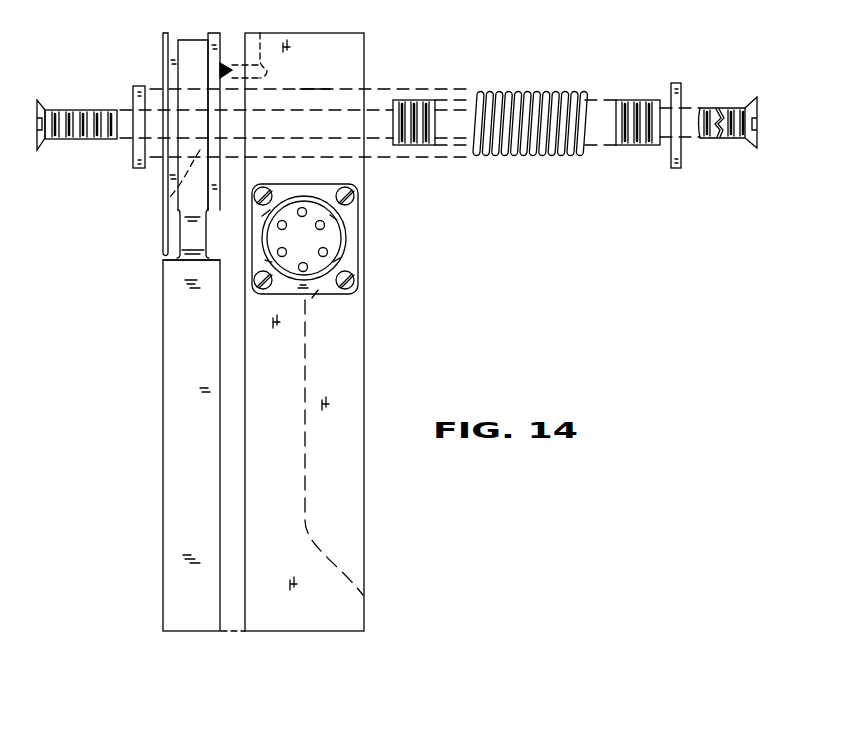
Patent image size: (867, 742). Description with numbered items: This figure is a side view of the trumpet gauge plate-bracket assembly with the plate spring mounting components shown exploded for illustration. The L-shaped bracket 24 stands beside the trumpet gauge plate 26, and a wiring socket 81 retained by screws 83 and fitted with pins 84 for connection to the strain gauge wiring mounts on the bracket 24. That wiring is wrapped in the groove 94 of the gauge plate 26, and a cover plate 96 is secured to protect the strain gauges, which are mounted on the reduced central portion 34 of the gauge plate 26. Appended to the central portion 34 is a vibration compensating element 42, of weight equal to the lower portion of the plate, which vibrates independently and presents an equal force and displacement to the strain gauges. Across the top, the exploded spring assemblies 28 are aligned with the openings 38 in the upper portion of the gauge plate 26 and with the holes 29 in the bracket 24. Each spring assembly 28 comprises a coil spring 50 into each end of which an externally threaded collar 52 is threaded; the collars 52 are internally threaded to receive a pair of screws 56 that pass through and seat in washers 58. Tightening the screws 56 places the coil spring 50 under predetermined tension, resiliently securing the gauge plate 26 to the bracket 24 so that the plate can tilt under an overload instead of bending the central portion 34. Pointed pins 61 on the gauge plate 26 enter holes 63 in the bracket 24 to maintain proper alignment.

The bracket 24 is at (372, 512).
The trumpet gauge plate 26 is at (218, 315).
The spring assembly 28 is at (548, 75).
The holes 29 is at (306, 88).
The central portion 34 is at (178, 257).
The openings 38 is at (163, 196).
The vibration compensating element 42 is at (200, 341).
The coil spring 50 is at (526, 92).
The externally threaded collar 52 is at (416, 100).
The screws 56 is at (43, 148).
The washers 58 is at (137, 87).
The pointed pins 61 is at (230, 66).
The holes 63 is at (262, 33).
The wiring socket 81 is at (347, 250).
The screws 83 is at (354, 194).
The pins 84 is at (322, 227).
The groove 94 is at (191, 40).
The cover plate 96 is at (165, 230).